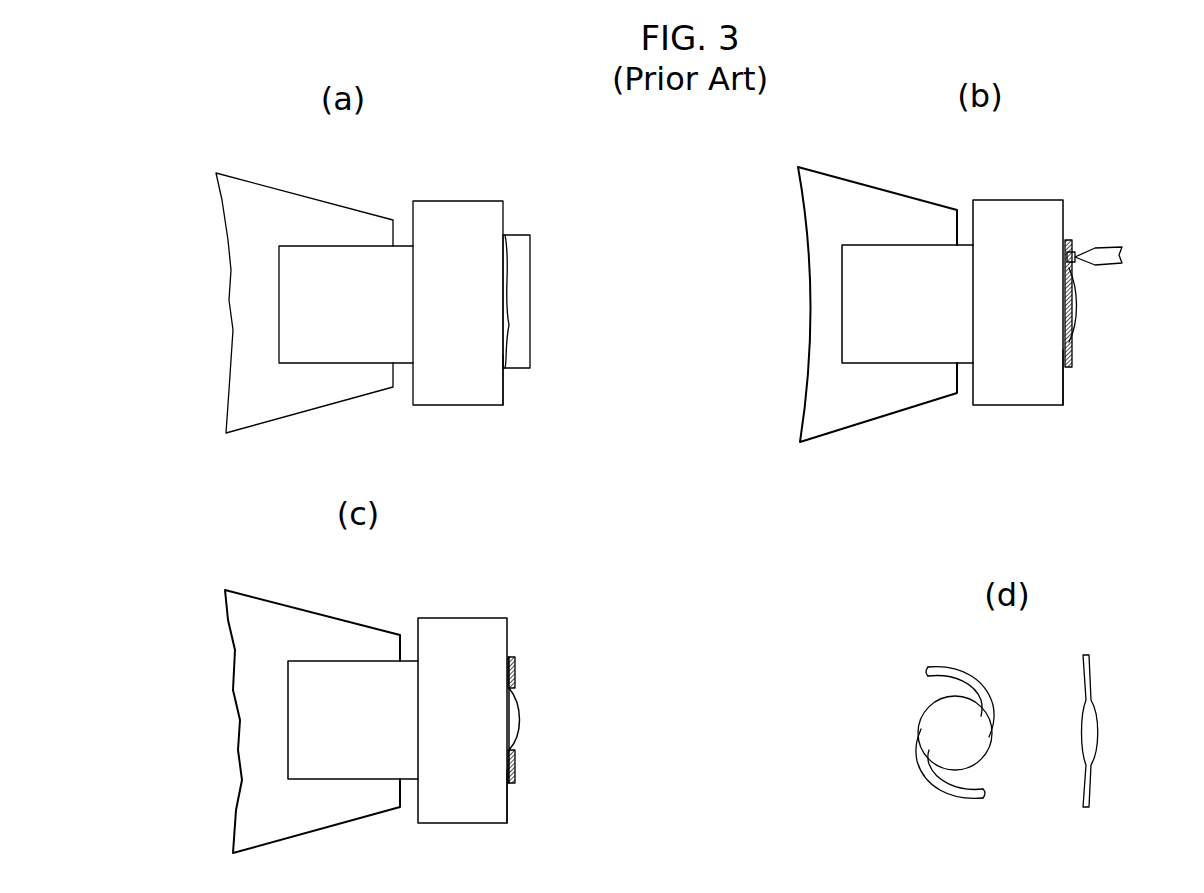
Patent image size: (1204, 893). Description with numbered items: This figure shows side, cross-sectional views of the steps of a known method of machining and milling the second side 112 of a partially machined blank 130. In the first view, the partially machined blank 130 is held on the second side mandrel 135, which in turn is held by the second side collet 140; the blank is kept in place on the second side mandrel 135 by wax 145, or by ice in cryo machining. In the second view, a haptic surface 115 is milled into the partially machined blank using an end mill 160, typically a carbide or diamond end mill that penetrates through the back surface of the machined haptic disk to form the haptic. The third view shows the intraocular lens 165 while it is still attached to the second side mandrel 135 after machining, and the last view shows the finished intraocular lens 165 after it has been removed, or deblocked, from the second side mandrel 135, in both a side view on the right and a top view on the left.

The second side 112 is at (537, 337).
The haptic surface 115 is at (1070, 263).
The partially machined blank 130 is at (517, 262).
The second side mandrel 135 is at (457, 228).
The second side collet 140 is at (342, 218).
The wax 145 is at (502, 353).
The end mill 160 is at (1097, 255).
The intraocular lens 165 is at (515, 722).